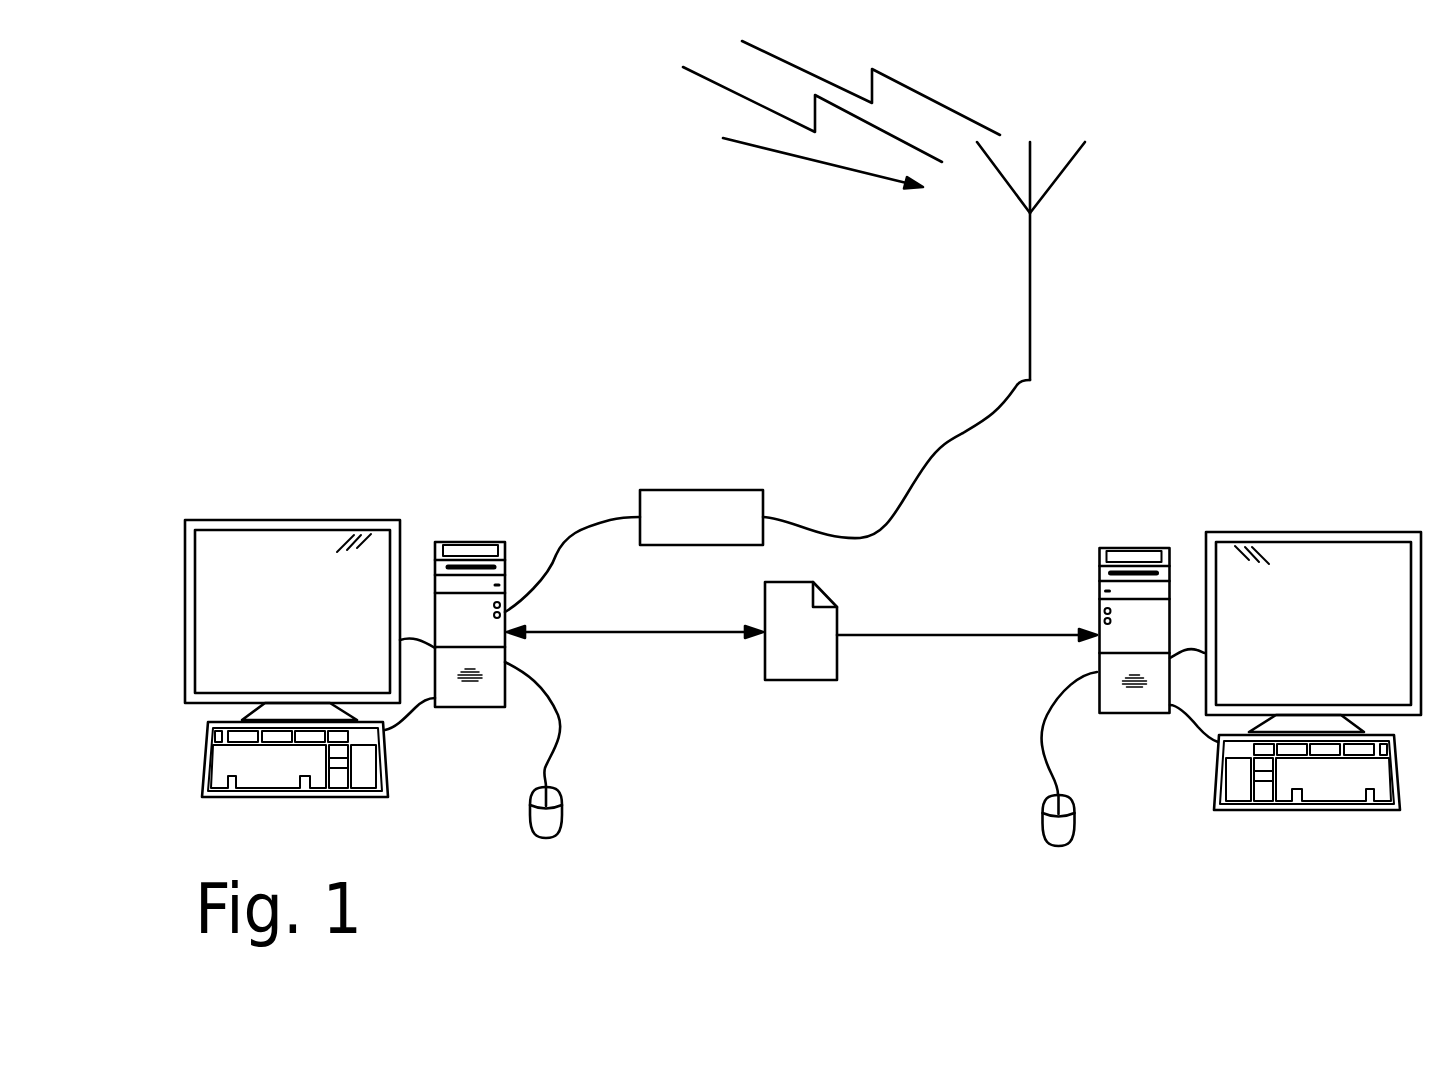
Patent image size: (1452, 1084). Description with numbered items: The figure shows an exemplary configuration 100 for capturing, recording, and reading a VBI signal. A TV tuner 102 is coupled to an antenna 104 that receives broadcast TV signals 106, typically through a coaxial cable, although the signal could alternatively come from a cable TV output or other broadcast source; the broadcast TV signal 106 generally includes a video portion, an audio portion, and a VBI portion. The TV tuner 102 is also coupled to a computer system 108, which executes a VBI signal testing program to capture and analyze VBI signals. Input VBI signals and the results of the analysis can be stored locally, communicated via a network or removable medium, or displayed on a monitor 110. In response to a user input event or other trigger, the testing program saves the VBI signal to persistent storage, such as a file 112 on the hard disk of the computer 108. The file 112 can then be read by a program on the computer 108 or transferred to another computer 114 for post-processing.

The configuration 100 is at (305, 175).
The TV tuner 102 is at (710, 490).
The antenna 104 is at (1030, 268).
The broadcast TV signals 106 is at (669, 112).
The computer system 108 is at (472, 542).
The monitor 110 is at (253, 520).
The file 112 is at (800, 680).
The second computer 114 is at (1132, 548).